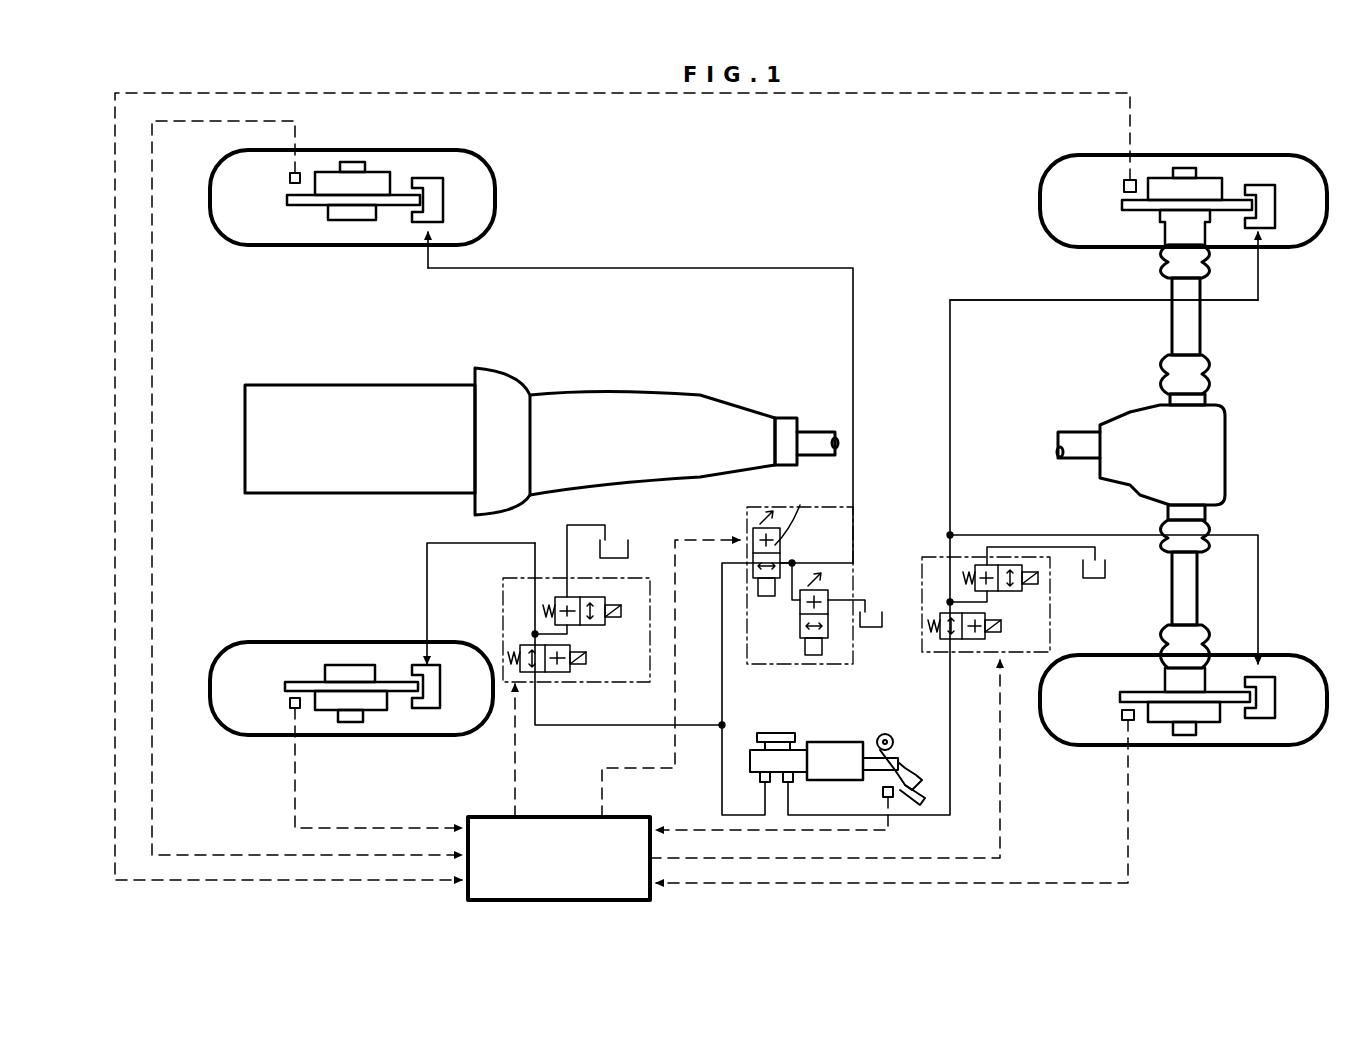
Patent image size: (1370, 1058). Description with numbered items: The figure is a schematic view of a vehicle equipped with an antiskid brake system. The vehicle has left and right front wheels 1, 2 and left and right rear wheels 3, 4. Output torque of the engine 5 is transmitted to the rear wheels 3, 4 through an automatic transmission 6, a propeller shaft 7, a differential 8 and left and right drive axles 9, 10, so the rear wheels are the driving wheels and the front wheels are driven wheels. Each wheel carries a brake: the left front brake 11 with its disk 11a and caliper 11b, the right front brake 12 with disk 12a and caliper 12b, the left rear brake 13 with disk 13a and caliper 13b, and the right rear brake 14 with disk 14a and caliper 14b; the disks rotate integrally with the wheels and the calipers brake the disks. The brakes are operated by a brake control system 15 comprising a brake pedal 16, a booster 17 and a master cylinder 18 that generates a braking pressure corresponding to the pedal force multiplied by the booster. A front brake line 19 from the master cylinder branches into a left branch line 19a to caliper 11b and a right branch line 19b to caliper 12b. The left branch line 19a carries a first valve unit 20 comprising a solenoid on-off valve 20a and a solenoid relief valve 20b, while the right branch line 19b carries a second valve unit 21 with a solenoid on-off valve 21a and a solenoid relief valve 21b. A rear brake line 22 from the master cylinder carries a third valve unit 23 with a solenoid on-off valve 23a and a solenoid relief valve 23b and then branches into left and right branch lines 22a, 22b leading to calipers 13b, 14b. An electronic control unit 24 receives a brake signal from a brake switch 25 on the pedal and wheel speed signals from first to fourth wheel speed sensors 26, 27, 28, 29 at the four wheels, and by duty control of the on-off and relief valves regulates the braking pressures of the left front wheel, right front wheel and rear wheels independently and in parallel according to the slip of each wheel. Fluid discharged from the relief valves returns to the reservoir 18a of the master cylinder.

The left front wheel 1 is at (239, 737).
The right front wheel 2 is at (496, 180).
The left rear wheel 3 is at (1288, 662).
The right rear wheel 4 is at (1046, 177).
The engine 5 is at (410, 396).
The automatic transmission 6 is at (700, 408).
The propeller shaft 7 is at (1082, 438).
The differential 8 is at (1220, 430).
The left drive axle 9 is at (1198, 614).
The right drive axle 10 is at (1202, 356).
The left front brake 11 is at (402, 664).
The disk 11a is at (325, 682).
The caliper 11b is at (432, 705).
The right front brake 12 is at (404, 178).
The disk 12a is at (306, 206).
The caliper 12b is at (441, 186).
The left rear brake 13 is at (1228, 714).
The disk 13a is at (1116, 696).
The caliper 13b is at (1273, 718).
The right rear brake 14 is at (1234, 180).
The disk 14a is at (1136, 210).
The caliper 14b is at (1275, 230).
The brake control system 15 is at (1012, 798).
The brake pedal 16 is at (904, 760).
The booster 17 is at (844, 742).
The master cylinder 18 is at (750, 732).
The reservoir 18a is at (794, 736).
The front brake line 19 is at (718, 786).
The left branch line 19a is at (434, 542).
The right branch line 19b is at (796, 266).
The first valve unit 20 is at (502, 600).
The solenoid on-off valve 20a is at (558, 672).
The solenoid relief valve 20b is at (594, 625).
The second valve unit 21 is at (744, 536).
The solenoid on-off valve 21a is at (780, 528).
The solenoid relief valve 21b is at (800, 620).
The rear brake line 22 is at (950, 816).
The left branch line 22a is at (1258, 535).
The right branch line 22b is at (1068, 300).
The third valve unit 23 is at (924, 556).
The solenoid on-off valve 23a is at (942, 650).
The solenoid relief valve 23b is at (1034, 600).
The electronic control unit 24 is at (470, 816).
The brake switch 25 is at (882, 792).
The first wheel speed sensor 26 is at (289, 701).
The second wheel speed sensor 27 is at (288, 180).
The third wheel speed sensor 28 is at (1124, 722).
The fourth wheel speed sensor 29 is at (1120, 180).